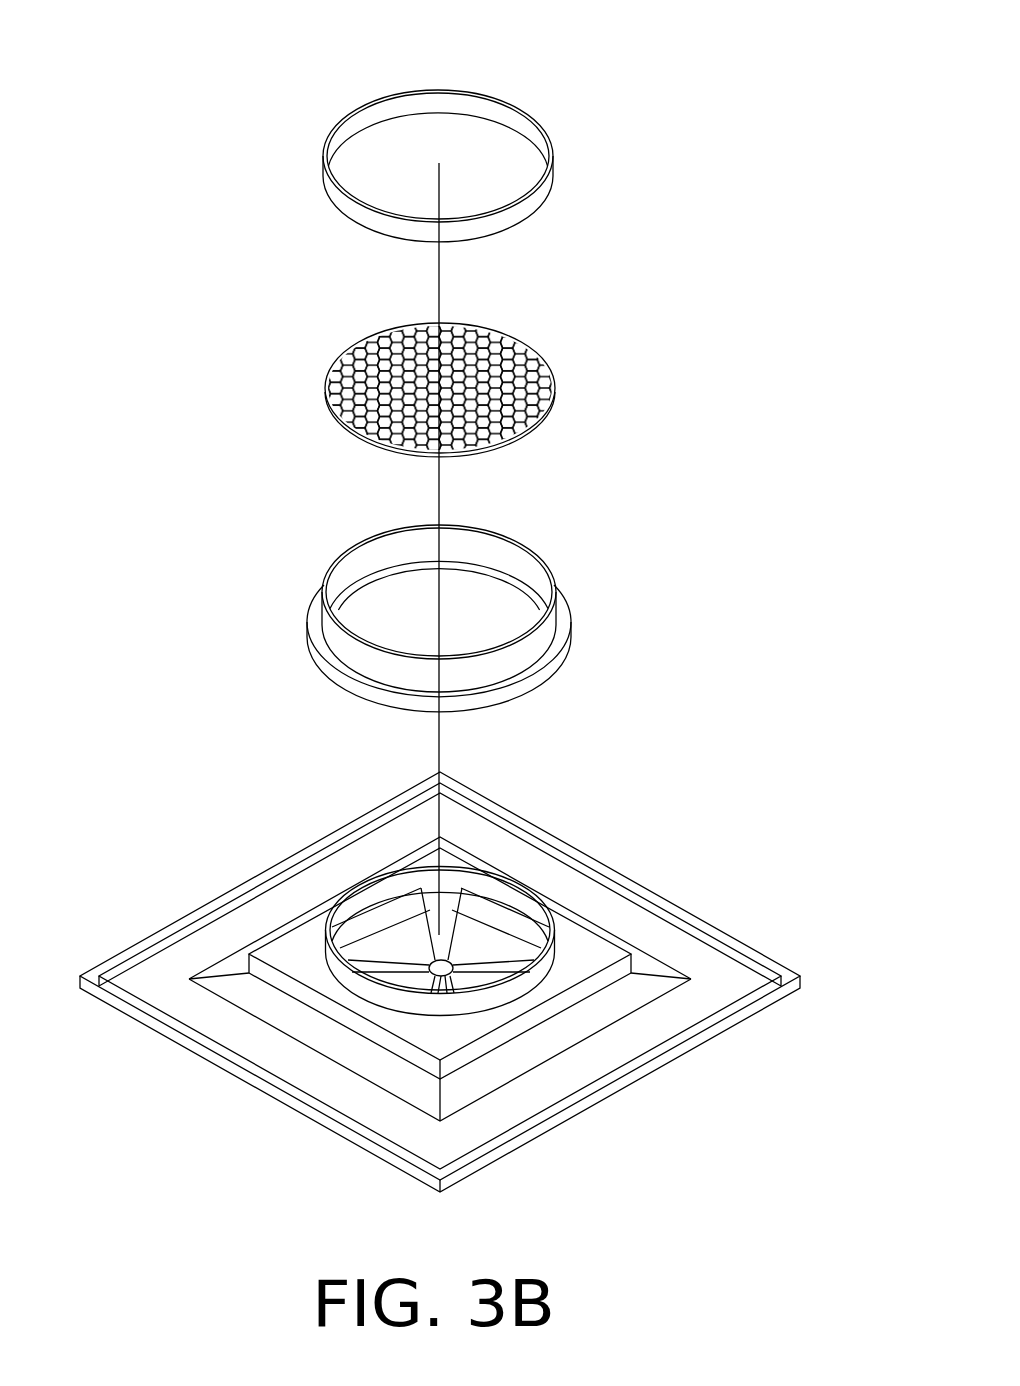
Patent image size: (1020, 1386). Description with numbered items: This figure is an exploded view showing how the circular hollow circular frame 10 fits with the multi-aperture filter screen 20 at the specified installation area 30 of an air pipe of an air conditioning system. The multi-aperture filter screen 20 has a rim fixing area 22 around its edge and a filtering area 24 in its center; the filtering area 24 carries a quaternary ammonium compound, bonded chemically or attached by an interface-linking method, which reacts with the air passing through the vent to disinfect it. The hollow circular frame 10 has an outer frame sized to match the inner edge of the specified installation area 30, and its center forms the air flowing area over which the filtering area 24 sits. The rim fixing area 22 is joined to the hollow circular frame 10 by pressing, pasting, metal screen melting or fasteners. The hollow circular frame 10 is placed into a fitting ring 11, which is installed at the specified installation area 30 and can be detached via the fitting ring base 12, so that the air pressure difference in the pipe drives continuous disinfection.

The hollow circular frame 10 is at (518, 122).
The fitting ring 11 is at (512, 560).
The fitting ring base 12 is at (567, 620).
The multi-aperture filter screen 20 is at (484, 367).
The rim fixing area 22 is at (545, 362).
The filtering area 24 is at (397, 381).
The specified installation area 30 is at (622, 905).